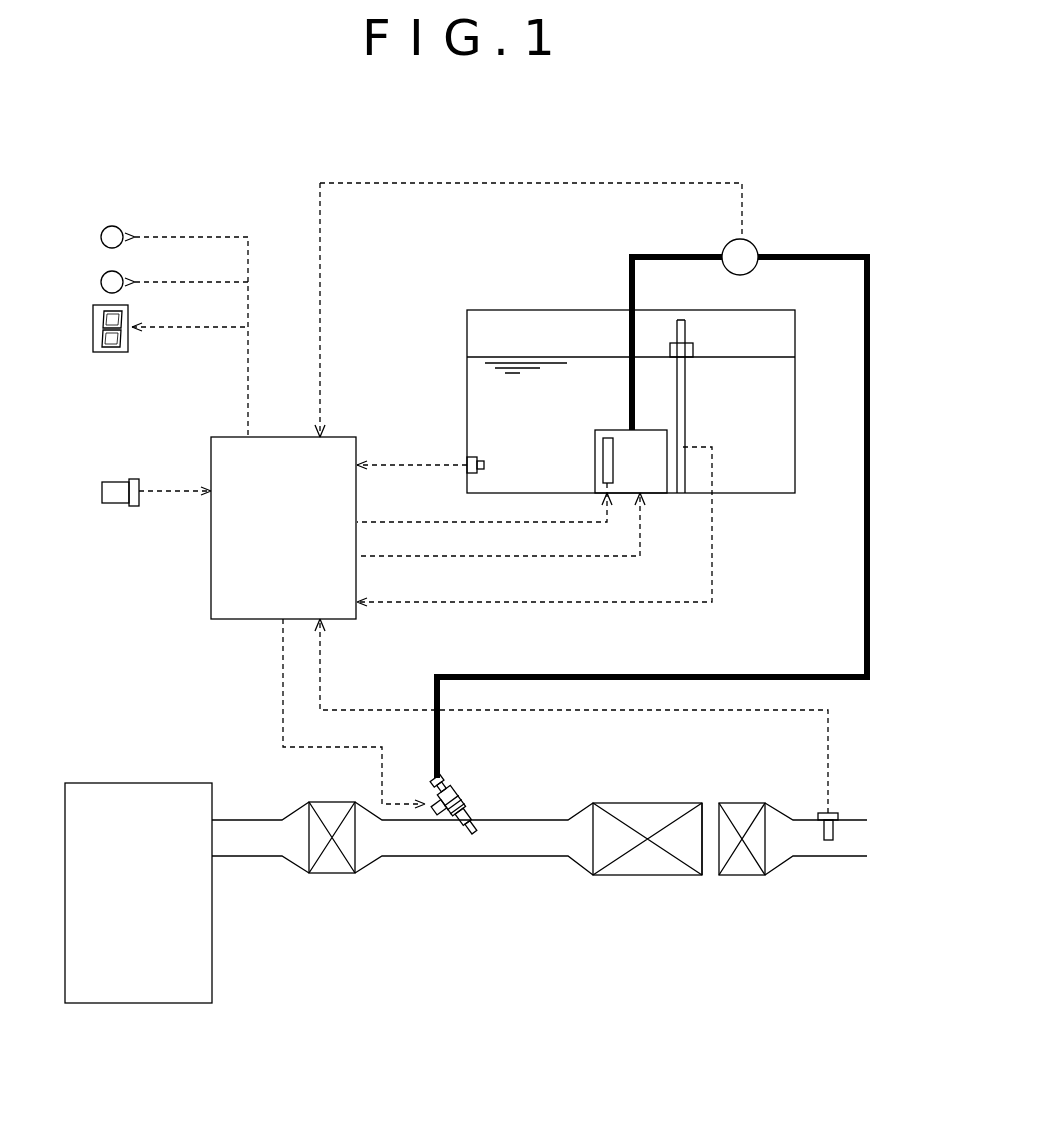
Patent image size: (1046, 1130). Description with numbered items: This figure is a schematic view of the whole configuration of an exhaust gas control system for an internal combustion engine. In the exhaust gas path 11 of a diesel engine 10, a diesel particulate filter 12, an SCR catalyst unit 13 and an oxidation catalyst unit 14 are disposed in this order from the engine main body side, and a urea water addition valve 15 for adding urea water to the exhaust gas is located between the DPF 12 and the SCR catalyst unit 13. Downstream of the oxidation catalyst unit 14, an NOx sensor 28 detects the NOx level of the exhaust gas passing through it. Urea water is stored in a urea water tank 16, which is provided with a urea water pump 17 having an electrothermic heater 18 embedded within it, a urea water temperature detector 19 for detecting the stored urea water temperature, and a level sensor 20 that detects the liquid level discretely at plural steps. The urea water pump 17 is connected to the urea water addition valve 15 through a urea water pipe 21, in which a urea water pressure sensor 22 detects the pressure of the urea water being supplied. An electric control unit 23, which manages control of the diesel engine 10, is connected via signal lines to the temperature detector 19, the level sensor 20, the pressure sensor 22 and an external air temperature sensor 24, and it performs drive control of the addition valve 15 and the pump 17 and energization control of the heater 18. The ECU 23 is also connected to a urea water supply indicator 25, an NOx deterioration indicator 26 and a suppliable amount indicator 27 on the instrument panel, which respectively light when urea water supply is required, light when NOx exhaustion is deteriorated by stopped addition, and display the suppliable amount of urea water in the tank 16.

The diesel engine 10 is at (121, 783).
The exhaust gas path 11 is at (428, 858).
The diesel particulate filter 12 is at (330, 865).
The SCR catalyst unit 13 is at (648, 860).
The oxidation catalyst unit 14 is at (746, 862).
The urea water addition valve 15 is at (452, 798).
The urea water tank 16 is at (539, 310).
The urea water pump 17 is at (612, 430).
The electrothermic heater 18 is at (603, 458).
The urea water temperature detector 19 is at (480, 457).
The level sensor 20 is at (686, 395).
The urea water pipe 21 is at (865, 537).
The urea water pressure sensor 22 is at (752, 241).
The electric control unit 23 is at (246, 620).
The external air temperature sensor 24 is at (114, 481).
The urea water supply indicator 25 is at (101, 236).
The NOx deterioration indicator 26 is at (101, 282).
The suppliable amount indicator 27 is at (109, 354).
The NOx sensor 28 is at (822, 813).